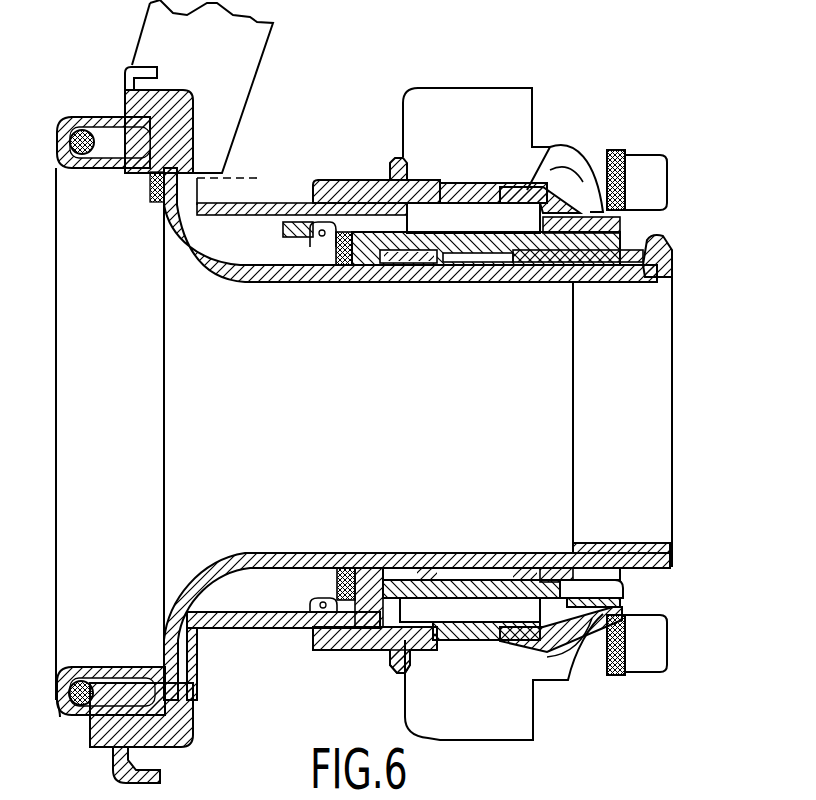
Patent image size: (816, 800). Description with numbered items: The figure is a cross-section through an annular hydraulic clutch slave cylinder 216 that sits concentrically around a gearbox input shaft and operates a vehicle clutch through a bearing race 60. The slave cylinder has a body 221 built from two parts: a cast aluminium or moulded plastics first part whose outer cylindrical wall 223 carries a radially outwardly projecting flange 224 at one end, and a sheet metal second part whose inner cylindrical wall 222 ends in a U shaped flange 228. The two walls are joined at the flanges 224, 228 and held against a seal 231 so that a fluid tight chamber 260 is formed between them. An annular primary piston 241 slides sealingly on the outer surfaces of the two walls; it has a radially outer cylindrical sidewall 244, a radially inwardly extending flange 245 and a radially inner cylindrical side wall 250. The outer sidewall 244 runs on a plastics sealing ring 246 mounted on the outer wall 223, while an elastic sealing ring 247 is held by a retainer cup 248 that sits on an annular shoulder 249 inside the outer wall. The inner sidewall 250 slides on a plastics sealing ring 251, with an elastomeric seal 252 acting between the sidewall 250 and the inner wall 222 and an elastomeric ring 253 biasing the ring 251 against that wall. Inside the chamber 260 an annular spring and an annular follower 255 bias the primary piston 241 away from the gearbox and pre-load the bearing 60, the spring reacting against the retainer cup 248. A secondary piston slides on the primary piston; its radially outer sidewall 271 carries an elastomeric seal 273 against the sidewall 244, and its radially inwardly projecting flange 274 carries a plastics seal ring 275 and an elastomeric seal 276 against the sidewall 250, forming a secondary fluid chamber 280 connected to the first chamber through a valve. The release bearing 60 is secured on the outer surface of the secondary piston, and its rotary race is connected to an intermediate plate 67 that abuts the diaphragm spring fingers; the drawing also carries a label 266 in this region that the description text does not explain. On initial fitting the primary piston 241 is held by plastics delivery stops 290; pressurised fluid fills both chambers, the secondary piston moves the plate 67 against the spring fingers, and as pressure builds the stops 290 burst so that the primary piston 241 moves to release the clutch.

The annular hydraulic clutch slave cylinder 216 is at (318, 148).
The body 221 is at (183, 244).
The inner cylindrical wall 222 is at (403, 270).
The outer cylindrical wall 223 is at (240, 264).
The radially outwardly projecting flange 224 is at (197, 720).
The U shaped flange 228 is at (140, 756).
The seal 231 is at (60, 703).
The annular primary piston 241 is at (460, 598).
The radially outer cylindrical sidewall 244 is at (268, 200).
The radially inwardly extending flange 245 is at (420, 646).
The plastics sealing ring 246 is at (242, 632).
The elastic sealing ring 247 is at (372, 577).
The retainer cup 248 is at (330, 264).
The annular shoulder 249 is at (295, 262).
The radially inner cylindrical side wall 250 is at (620, 590).
The plastics sealing ring 251 is at (488, 259).
The elastomeric seal 252 is at (425, 268).
The elastomeric ring 253 is at (533, 281).
The annular follower 255 is at (362, 575).
The fluid chamber 260 is at (268, 588).
The wheel flange 266 is at (193, 124).
The radially outer sidewall 271 is at (335, 182).
The elastomeric seal 273 is at (370, 647).
The radially inwardly projecting flange 274 is at (560, 623).
The plastics seal ring 275 is at (607, 548).
The elastomeric seal 276 is at (553, 568).
The secondary fluid chamber 280 is at (470, 213).
The plastics delivery stops 290 is at (660, 235).
The bearing race 60 is at (494, 134).
The intermediate plate 67 is at (655, 186).